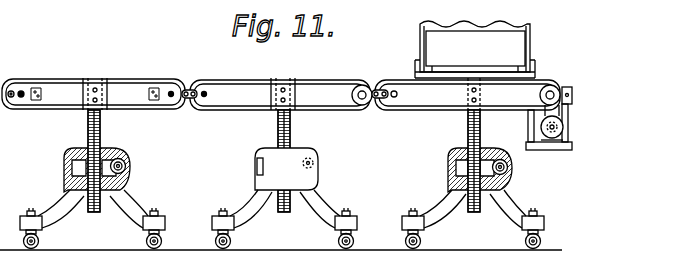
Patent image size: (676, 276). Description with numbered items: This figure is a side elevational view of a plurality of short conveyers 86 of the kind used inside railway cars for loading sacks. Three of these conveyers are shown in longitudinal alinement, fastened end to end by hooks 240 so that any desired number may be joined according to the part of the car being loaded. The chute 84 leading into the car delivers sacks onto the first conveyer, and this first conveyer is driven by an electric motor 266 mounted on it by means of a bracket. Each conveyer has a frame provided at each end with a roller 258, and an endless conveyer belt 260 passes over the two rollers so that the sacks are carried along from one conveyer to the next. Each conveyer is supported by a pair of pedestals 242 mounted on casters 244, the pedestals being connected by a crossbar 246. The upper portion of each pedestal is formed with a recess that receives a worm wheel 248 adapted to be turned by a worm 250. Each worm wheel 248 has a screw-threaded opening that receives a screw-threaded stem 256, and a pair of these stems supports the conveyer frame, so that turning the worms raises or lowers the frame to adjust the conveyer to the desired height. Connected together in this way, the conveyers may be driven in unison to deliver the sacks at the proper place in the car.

The endless conveyer belt 260 is at (64, 66).
The short conveyers 86 is at (94, 79).
The hooks 240 is at (190, 89).
The roller 258 is at (364, 86).
The chute 84 is at (515, 38).
The electric motor 266 is at (568, 139).
The worm wheel 248 is at (72, 166).
The worm 250 is at (126, 166).
The screw-threaded stem 256 is at (86, 128).
The pedestals 242 is at (64, 196).
The crossbar 246 is at (165, 221).
The casters 244 is at (145, 241).